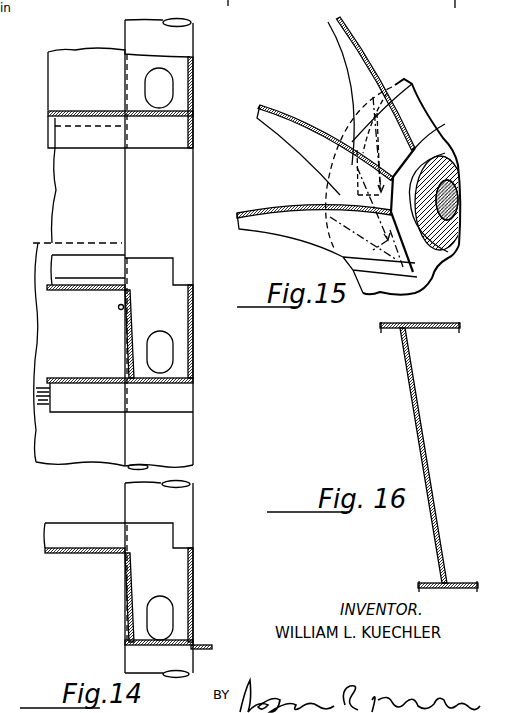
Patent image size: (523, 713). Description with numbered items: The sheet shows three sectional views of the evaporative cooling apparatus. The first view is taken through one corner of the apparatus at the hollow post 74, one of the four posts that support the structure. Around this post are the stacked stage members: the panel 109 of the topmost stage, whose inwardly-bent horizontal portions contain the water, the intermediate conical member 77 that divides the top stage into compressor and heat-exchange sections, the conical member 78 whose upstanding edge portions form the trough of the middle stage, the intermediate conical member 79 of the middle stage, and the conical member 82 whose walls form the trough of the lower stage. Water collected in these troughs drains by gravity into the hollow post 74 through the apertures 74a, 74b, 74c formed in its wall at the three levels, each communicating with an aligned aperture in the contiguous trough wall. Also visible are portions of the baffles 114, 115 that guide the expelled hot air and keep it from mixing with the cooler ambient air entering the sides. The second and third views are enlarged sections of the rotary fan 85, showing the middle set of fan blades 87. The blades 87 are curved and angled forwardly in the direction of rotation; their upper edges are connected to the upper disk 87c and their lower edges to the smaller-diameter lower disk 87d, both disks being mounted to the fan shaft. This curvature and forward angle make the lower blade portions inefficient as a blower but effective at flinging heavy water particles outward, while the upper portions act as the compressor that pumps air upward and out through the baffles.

In FIG. 14, the hollow post 74 is at (180, 502).
In FIG. 14, the aperture 74a is at (163, 92).
In FIG. 14, the aperture 74b is at (160, 358).
In FIG. 14, the aperture 74c is at (165, 617).
In FIG. 14, the intermediate conical member 77 is at (63, 117).
In FIG. 14, the truncated conical member 78 is at (70, 292).
In FIG. 14, the intermediate conical member 79 is at (80, 383).
In FIG. 14, the truncated conical member 82 is at (90, 553).
In FIG. 14, the panel 109 is at (88, 73).
In FIG. 14, the baffle 114 is at (75, 200).
In FIG. 14, the baffle 115 is at (65, 362).
In FIG. 15, the rotary fan 85 is at (450, 157).
In FIG. 15, the middle set of fan blades 87 is at (318, 125).
In FIG. 16, the middle set of fan blades 87 is at (425, 458).
In FIG. 16, the upper disk 87c is at (447, 333).
In FIG. 15, the lower disk 87d is at (415, 113).
In FIG. 16, the lower disk 87d is at (432, 587).